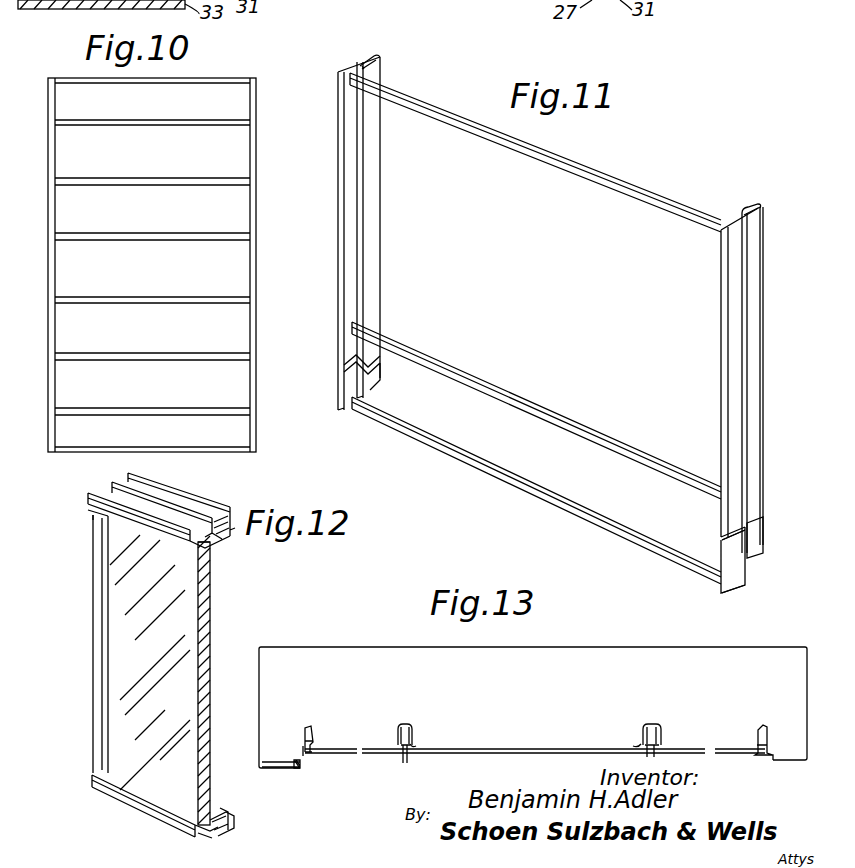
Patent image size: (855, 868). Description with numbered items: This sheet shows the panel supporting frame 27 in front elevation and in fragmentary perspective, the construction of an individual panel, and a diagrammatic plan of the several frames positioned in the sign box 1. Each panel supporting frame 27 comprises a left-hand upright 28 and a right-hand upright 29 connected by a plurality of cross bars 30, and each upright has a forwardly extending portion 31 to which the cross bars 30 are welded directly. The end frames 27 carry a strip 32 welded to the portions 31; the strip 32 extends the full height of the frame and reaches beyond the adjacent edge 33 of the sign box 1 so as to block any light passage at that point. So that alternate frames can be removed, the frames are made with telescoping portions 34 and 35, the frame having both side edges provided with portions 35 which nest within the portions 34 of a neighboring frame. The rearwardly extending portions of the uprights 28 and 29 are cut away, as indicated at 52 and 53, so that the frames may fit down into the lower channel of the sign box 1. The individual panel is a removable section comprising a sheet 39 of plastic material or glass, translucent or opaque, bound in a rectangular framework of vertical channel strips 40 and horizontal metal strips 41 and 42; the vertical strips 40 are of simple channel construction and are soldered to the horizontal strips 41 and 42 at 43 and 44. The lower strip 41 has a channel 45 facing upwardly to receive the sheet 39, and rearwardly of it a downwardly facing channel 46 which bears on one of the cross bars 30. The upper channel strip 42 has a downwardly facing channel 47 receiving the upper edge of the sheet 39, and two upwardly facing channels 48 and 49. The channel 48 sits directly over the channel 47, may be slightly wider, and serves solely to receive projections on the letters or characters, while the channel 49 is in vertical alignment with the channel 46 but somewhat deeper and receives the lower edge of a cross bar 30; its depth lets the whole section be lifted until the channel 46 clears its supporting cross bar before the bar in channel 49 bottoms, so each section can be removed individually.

In FIG. 13, the sign box 1 is at (335, 648).
In FIG. 10, the panel supporting frame 27 is at (48, 114).
In FIG. 11, the left-hand upright 28 is at (355, 66).
In FIG. 13, the left-hand upright 28 is at (312, 728).
In FIG. 11, the right-hand upright 29 is at (740, 207).
In FIG. 13, the right-hand upright 29 is at (408, 726).
In FIG. 10, the cross bar 30 is at (110, 126).
In FIG. 11, the cross bar 30 is at (470, 124).
In FIG. 13, the cross bar 30 is at (508, 748).
In FIG. 11, the forwardly extending portion 31 is at (338, 188).
In FIG. 13, the forwardly extending portion 31 is at (308, 754).
In FIG. 13, the strip 32 is at (278, 761).
In FIG. 13, the adjacent edge of the sign box 33 is at (288, 769).
In FIG. 13, the telescoping portion 34 is at (402, 727).
In FIG. 11, the telescoping portion 35 is at (371, 54).
In FIG. 13, the telescoping portion 35 is at (415, 745).
In FIG. 12, the sheet 39 is at (211, 656).
In FIG. 12, the vertical channel strip 40 is at (95, 720).
In FIG. 12, the lower horizontal metal strip 41 is at (198, 835).
In FIG. 12, the upper channel strip 42 is at (200, 533).
In FIG. 12, the soldered joint 43 is at (95, 774).
In FIG. 12, the soldered joint 44 is at (93, 517).
In FIG. 12, the upwardly facing channel 45 is at (214, 812).
In FIG. 12, the downwardly facing channel 46 is at (218, 828).
In FIG. 12, the downwardly facing channel 47 is at (212, 550).
In FIG. 12, the upwardly facing channel 48 is at (100, 490).
In FIG. 12, the upwardly facing channel 49 is at (122, 475).
In FIG. 11, the cut away portion 52 is at (372, 392).
In FIG. 11, the cut away portion 53 is at (746, 575).